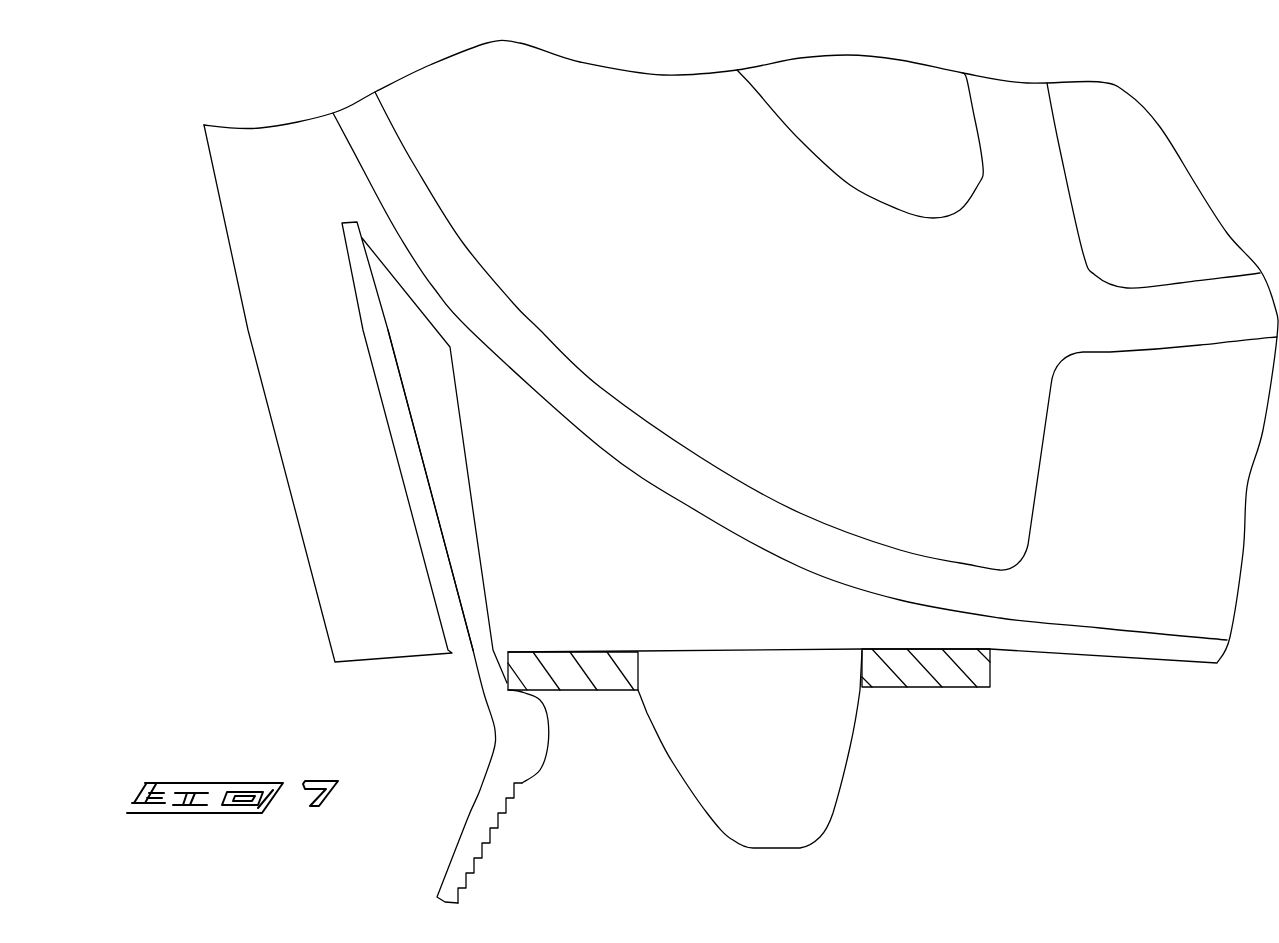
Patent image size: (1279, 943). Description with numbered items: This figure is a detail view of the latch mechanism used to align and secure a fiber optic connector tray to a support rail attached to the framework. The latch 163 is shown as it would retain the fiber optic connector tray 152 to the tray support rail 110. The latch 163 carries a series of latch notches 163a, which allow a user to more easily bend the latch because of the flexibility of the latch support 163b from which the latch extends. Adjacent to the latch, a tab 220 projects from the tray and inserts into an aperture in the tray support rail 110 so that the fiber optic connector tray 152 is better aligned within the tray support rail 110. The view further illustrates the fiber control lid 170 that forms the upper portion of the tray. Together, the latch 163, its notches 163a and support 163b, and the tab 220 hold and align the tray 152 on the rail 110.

The fiber optic connector tray 152 is at (1137, 680).
The fiber control lid 170 is at (783, 322).
The tray support rail 110 is at (572, 673).
The tab 220 is at (785, 760).
The latch 163 is at (522, 733).
The latch notches 163a is at (473, 873).
The latch support 163b is at (447, 518).